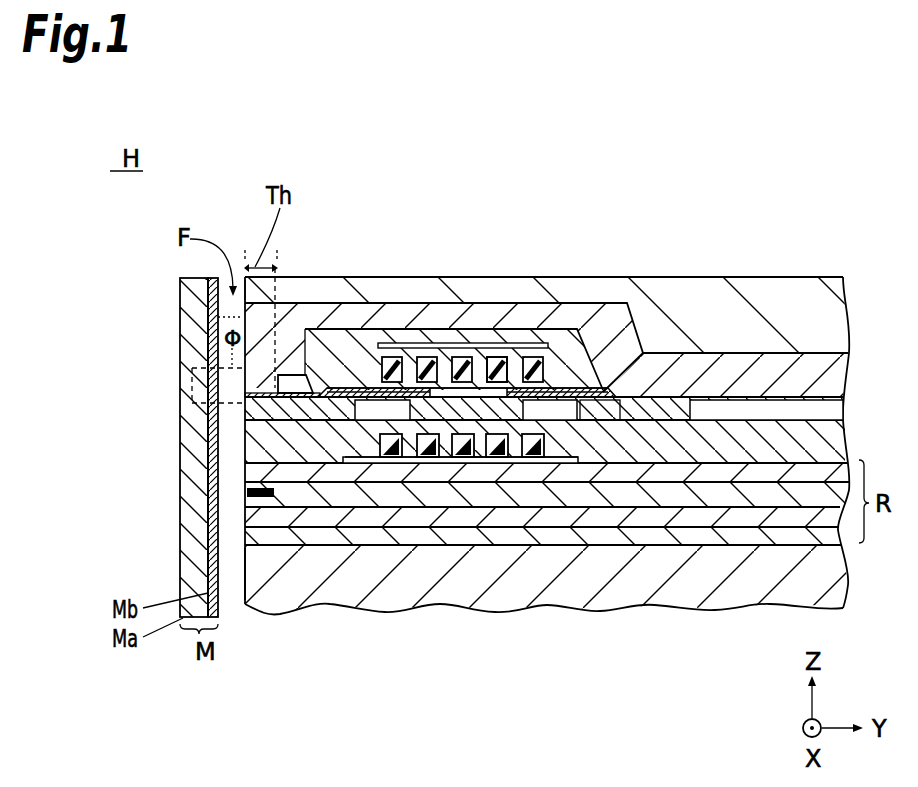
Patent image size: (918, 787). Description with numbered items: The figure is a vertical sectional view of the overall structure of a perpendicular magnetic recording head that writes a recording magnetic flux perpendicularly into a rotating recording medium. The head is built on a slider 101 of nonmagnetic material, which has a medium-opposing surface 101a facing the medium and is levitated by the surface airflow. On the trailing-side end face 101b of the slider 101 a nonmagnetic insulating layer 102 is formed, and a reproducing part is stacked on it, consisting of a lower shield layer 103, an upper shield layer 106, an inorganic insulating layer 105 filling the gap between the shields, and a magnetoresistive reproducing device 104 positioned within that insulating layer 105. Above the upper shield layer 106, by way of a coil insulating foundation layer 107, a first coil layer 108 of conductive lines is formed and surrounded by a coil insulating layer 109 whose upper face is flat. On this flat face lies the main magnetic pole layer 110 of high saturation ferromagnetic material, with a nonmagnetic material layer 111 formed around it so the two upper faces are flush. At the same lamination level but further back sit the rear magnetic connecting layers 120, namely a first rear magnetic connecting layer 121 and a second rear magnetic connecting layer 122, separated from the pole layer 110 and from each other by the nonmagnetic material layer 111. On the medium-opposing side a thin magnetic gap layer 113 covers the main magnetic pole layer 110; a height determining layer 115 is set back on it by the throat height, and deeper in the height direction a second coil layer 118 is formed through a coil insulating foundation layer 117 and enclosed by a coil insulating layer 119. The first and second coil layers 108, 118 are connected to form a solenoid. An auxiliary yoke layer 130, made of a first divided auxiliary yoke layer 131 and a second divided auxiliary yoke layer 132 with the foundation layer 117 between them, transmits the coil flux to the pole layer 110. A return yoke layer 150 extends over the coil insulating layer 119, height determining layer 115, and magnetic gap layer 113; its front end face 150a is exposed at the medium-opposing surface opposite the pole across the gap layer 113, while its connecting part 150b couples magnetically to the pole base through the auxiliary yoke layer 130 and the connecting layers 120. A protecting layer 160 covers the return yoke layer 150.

The slider 101 is at (673, 600).
The medium-opposing surface 101a is at (240, 585).
The trailing-side end face 101b is at (740, 535).
The nonmagnetic insulating layer 102 is at (245, 537).
The lower shield layer 103 is at (245, 513).
The reproducing device 104 is at (245, 491).
The inorganic insulating layer 105 is at (308, 468).
The upper shield layer 106 is at (245, 468).
The coil insulating foundation layer 107 is at (423, 463).
The first coil layer 108 is at (465, 463).
The coil insulating layer 109 is at (245, 447).
The main magnetic pole layer 110 is at (245, 404).
The nonmagnetic material layer 111 is at (570, 407).
The magnetic gap layer 113 is at (272, 382).
The height determining layer 115 is at (290, 373).
The coil insulating foundation layer 117 is at (362, 380).
The second coil layer 118 is at (455, 343).
The coil insulating layer 119 is at (503, 357).
The rear magnetic connecting layers 120 is at (610, 704).
The first rear magnetic connecting layer 121 is at (502, 458).
The second rear magnetic connecting layer 122 is at (615, 412).
The auxiliary yoke layer 130 is at (563, 138).
The first divided auxiliary yoke layer 131 is at (352, 382).
The second divided auxiliary yoke layer 132 is at (555, 390).
The return yoke layer 150 is at (328, 288).
The front end face 150a is at (243, 311).
The connecting part 150b is at (667, 358).
The protecting layer 160 is at (748, 315).